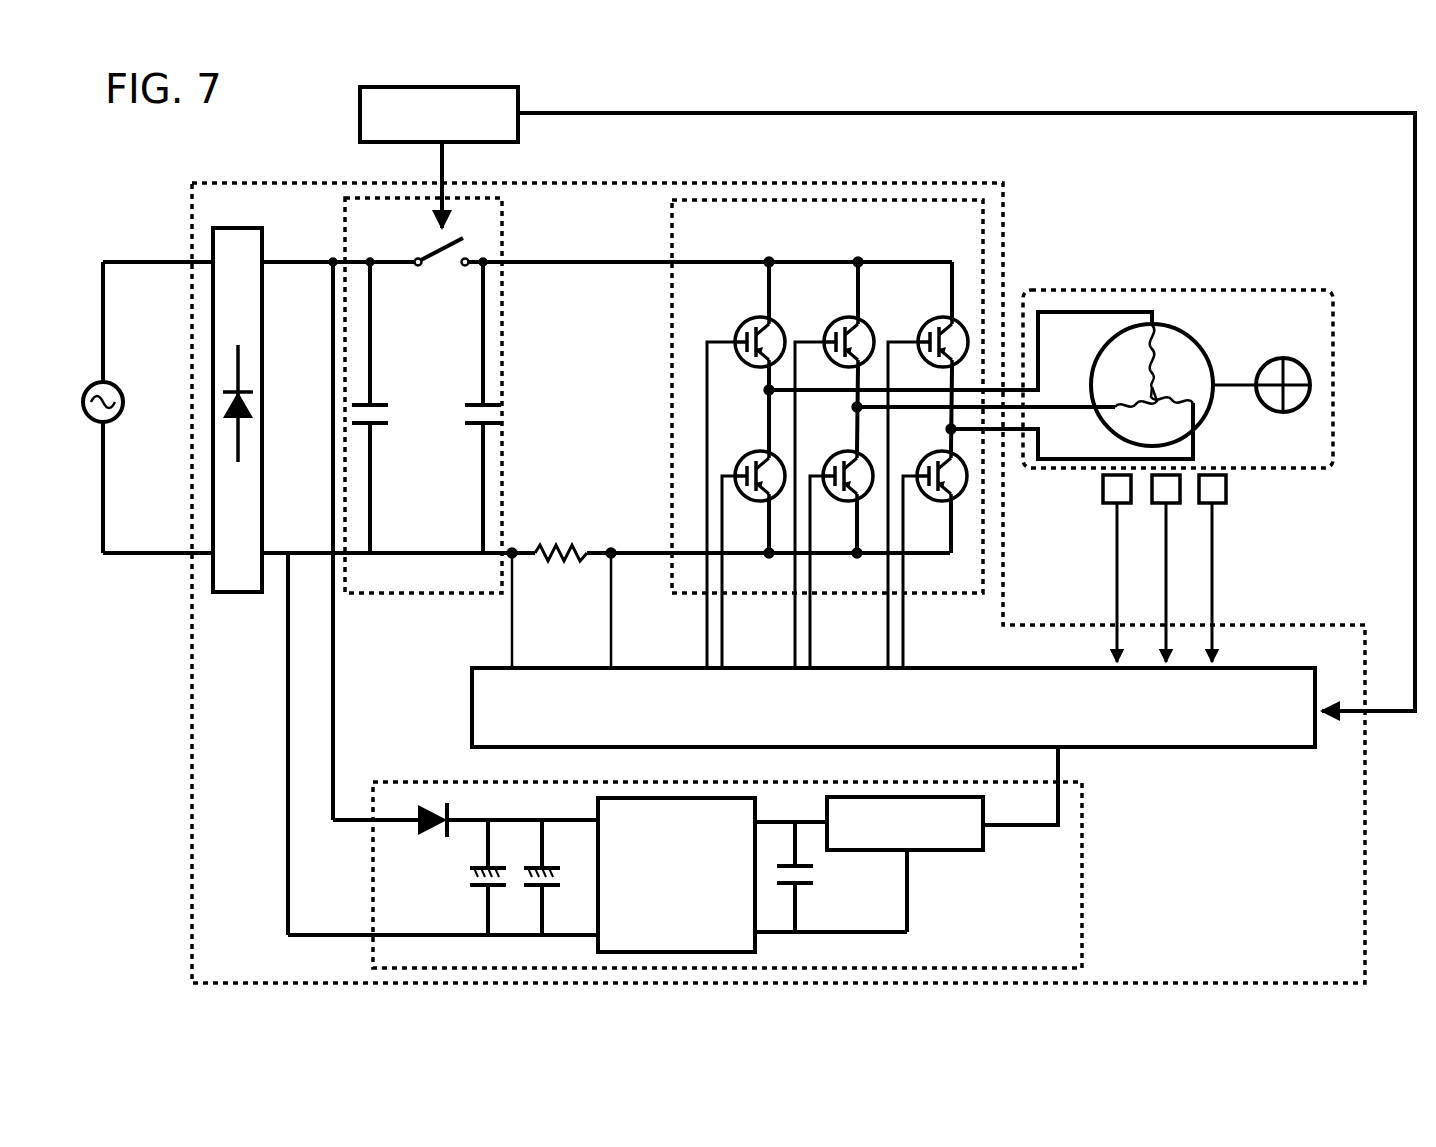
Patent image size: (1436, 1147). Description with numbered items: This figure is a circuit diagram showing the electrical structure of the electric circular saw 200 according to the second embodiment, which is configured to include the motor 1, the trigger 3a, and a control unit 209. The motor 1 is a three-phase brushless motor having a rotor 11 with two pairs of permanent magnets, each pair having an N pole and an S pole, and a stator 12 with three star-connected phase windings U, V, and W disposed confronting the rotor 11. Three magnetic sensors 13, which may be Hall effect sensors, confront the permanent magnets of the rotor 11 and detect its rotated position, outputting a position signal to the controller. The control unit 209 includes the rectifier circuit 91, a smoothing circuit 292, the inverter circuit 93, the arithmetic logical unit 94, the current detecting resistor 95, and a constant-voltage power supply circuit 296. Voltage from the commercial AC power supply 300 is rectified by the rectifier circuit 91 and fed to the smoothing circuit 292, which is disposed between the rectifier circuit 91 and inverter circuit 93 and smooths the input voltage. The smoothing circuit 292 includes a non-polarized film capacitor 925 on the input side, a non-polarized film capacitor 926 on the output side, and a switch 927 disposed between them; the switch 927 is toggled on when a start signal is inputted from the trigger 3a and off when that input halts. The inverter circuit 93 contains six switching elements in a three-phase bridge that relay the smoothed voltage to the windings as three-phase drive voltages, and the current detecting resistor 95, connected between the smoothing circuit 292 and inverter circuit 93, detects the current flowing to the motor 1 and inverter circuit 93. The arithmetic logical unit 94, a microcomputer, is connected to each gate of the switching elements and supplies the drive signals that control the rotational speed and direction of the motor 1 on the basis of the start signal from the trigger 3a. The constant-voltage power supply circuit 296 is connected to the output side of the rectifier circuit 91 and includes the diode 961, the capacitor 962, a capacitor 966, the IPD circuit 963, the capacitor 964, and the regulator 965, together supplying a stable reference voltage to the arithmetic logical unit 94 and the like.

The electric circular saw 200 is at (1192, 100).
The control unit 209 is at (1366, 820).
The trigger 3a is at (518, 135).
The commercial AC power supply 300 is at (120, 412).
The rectifier circuit 91 is at (262, 324).
The smoothing circuit 292 is at (503, 340).
The film capacitor 925 is at (390, 420).
The film capacitor 926 is at (462, 408).
The switch 927 is at (503, 238).
The current detecting resistor 95 is at (564, 543).
The inverter circuit 93 is at (670, 345).
The motor 1 is at (1278, 282).
The stator 12 is at (1200, 345).
The rotor 11 is at (1275, 360).
The magnetic sensors 13 is at (1125, 503).
The arithmetic logical unit 94 is at (1235, 748).
The constant-voltage power supply circuit 296 is at (1083, 870).
The diode 961 is at (432, 838).
The capacitor 962 is at (490, 864).
The capacitor 966 is at (545, 864).
The IPD circuit 963 is at (757, 810).
The capacitor 964 is at (815, 884).
The regulator 965 is at (963, 852).